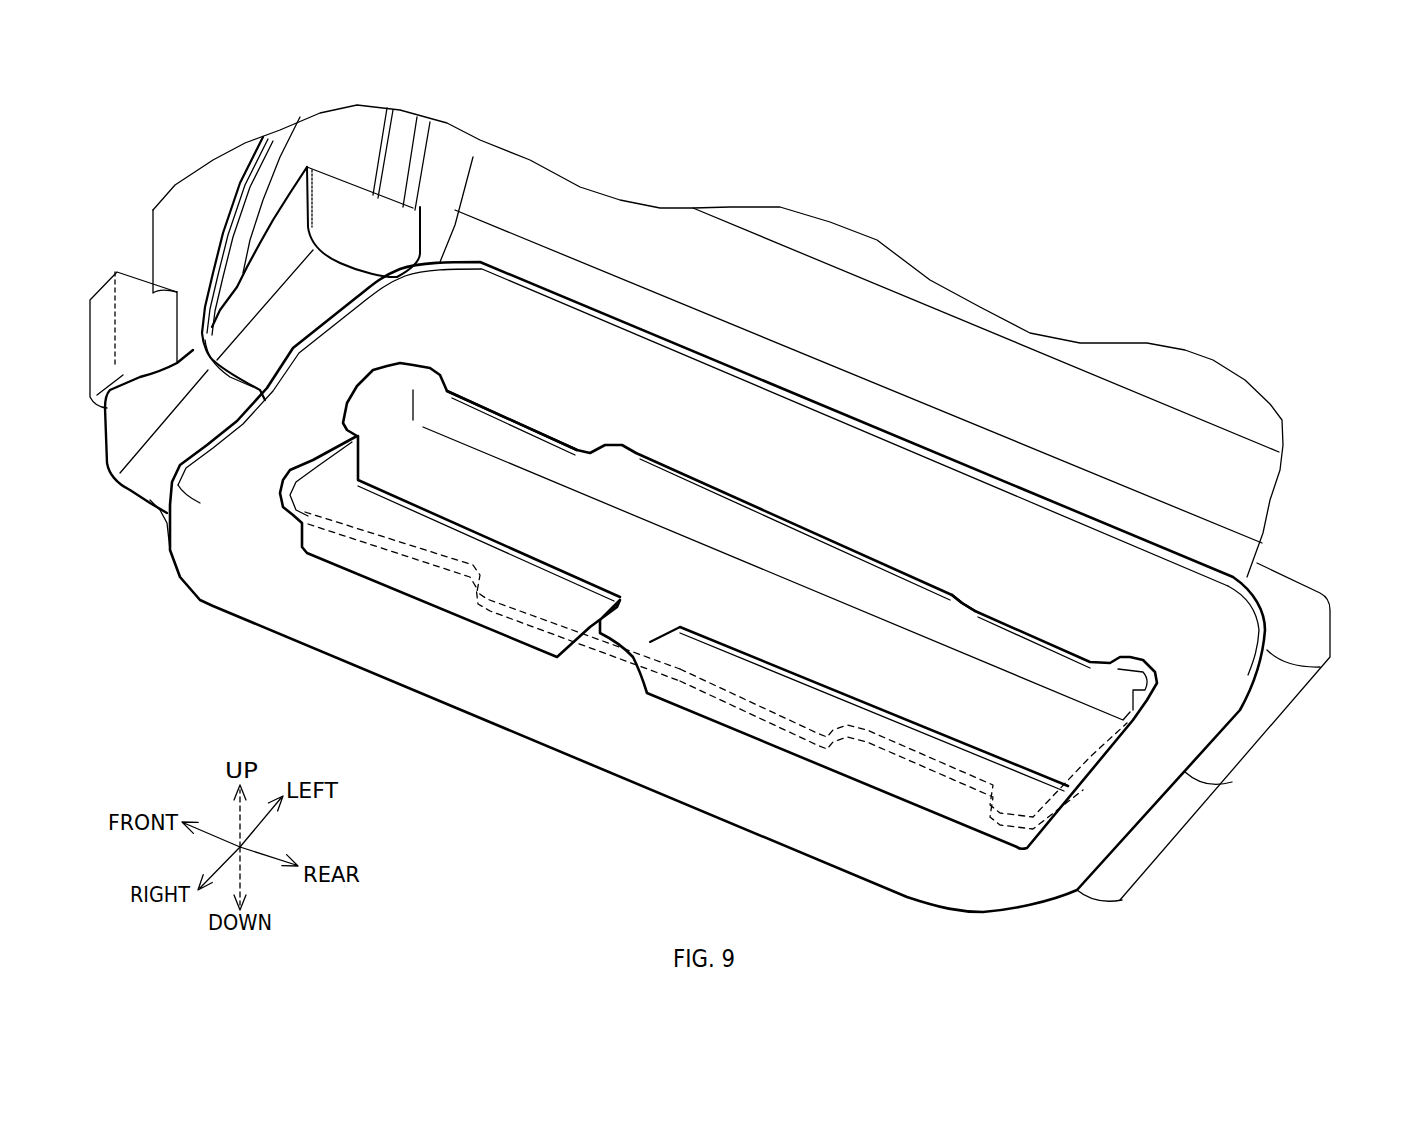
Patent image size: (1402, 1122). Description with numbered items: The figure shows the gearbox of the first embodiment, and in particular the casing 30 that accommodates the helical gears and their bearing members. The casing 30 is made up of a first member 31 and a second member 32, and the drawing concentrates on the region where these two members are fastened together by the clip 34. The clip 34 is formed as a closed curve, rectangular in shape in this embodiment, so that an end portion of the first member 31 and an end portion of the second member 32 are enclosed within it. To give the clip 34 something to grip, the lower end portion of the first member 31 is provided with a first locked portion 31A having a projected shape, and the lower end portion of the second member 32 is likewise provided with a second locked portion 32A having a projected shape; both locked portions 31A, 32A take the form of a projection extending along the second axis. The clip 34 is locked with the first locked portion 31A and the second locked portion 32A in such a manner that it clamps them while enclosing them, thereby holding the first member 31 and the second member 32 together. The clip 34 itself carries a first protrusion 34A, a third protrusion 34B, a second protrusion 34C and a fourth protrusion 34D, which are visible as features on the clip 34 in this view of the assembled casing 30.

The casing 30 is at (1123, 357).
The first member 31 is at (1160, 833).
The first locked portion 31A is at (330, 470).
The second member 32 is at (1253, 732).
The second locked portion 32A is at (347, 474).
The clip 34 is at (1227, 623).
The first protrusion 34A is at (905, 745).
The third protrusion 34B is at (400, 540).
The second protrusion 34C is at (1047, 620).
The fourth protrusion 34D is at (520, 410).